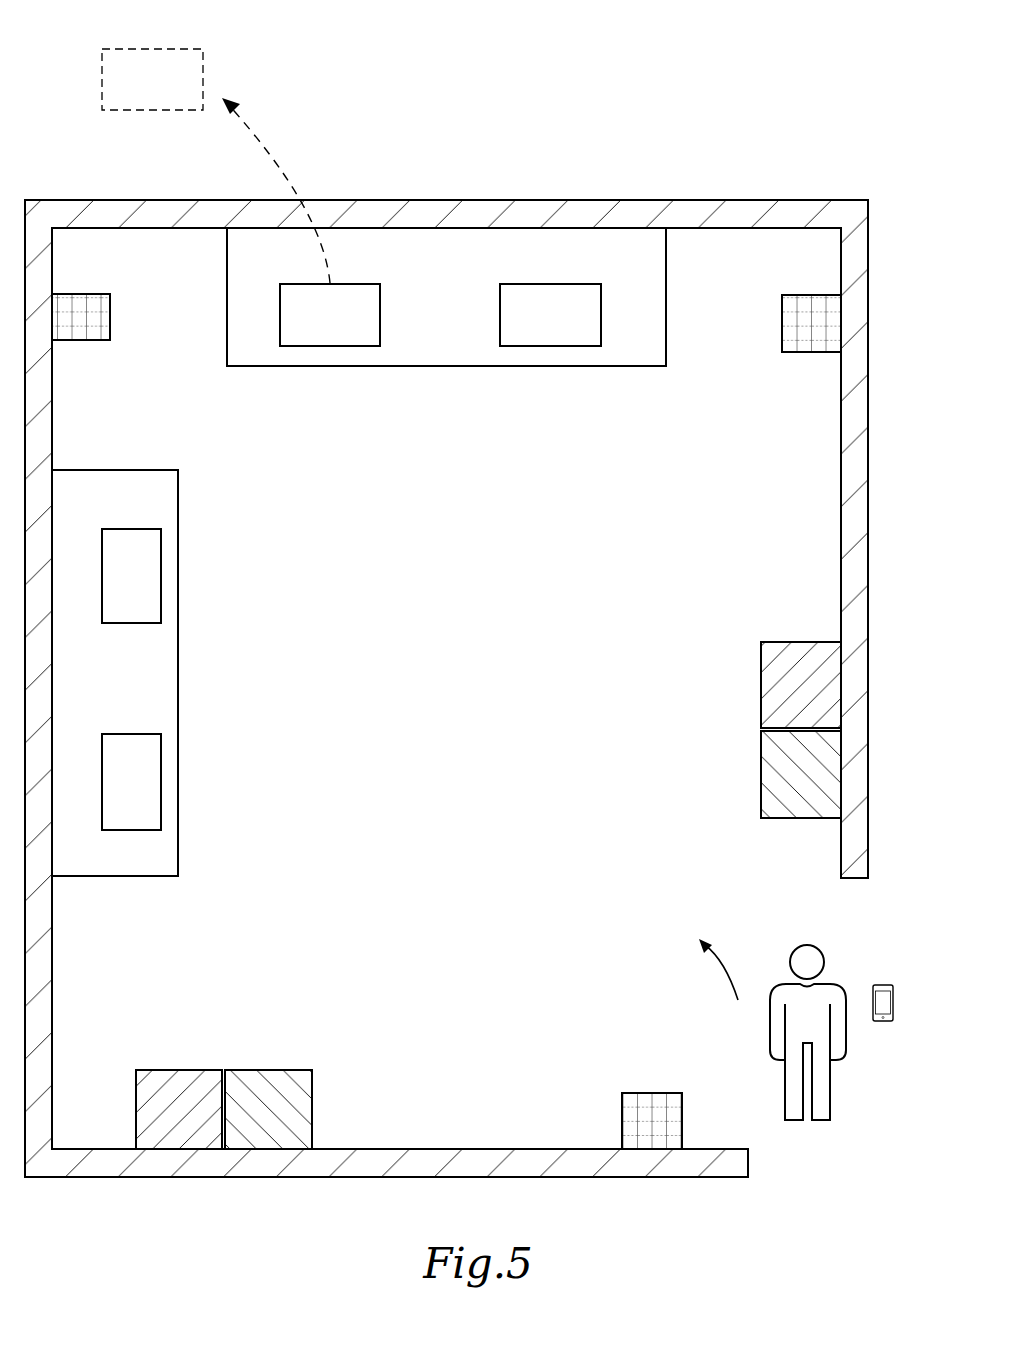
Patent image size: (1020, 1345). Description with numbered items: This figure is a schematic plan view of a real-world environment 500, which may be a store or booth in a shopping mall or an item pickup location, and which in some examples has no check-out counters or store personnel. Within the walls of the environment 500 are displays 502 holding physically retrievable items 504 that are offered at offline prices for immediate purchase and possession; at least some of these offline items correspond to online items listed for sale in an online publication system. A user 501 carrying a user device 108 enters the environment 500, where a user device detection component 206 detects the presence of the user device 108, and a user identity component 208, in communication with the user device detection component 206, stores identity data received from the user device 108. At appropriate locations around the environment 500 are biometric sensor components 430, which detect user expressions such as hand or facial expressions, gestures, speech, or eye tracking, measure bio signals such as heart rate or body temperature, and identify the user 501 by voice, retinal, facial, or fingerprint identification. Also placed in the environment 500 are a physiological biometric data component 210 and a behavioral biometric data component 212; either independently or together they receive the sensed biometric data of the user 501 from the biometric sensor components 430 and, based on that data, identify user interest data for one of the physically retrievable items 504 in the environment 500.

The real-world environment 500 is at (858, 538).
The display 502 is at (445, 367).
The physically retrievable item 504 is at (152, 48).
The biometric sensor component 430 is at (111, 325).
The physiological biometric data component 210 is at (761, 687).
The behavioral biometric data component 212 is at (761, 776).
The user device detection component 206 is at (179, 1069).
The user identity component 208 is at (270, 1069).
The user 501 is at (807, 945).
The user device 108 is at (883, 984).